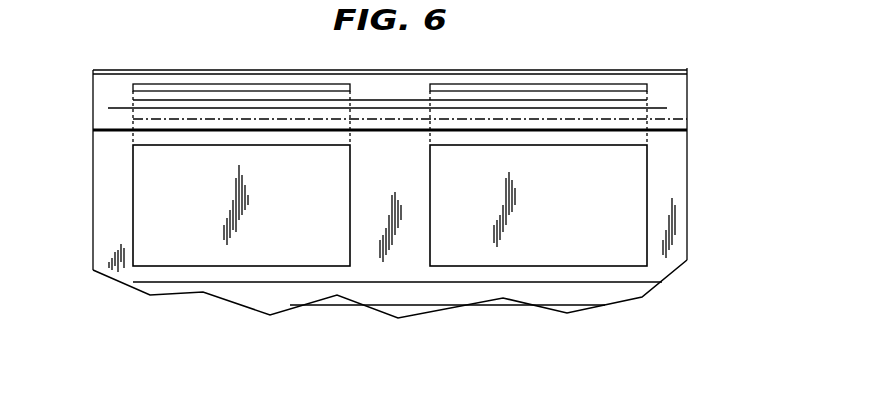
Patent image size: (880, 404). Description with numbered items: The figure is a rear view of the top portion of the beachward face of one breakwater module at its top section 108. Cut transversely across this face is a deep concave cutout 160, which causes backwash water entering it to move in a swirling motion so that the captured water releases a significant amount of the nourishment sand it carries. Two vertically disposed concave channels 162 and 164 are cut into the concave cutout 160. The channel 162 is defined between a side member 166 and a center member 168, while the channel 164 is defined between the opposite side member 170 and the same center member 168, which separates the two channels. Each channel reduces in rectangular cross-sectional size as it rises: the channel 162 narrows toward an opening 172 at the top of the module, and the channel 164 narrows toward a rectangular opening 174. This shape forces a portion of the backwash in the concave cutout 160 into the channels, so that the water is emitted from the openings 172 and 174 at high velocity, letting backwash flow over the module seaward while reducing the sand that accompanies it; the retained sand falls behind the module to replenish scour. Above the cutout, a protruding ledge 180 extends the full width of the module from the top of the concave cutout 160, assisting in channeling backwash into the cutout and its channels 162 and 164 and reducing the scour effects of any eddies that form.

The top section 108 is at (705, 212).
The concave cutout 160 is at (135, 224).
The concave channel 162 is at (593, 230).
The concave channel 164 is at (168, 163).
The side member 166 is at (670, 168).
The center member 168 is at (387, 173).
The side member 170 is at (118, 200).
The opening 172 is at (612, 87).
The rectangular opening 174 is at (192, 88).
The protruding ledge 180 is at (678, 115).